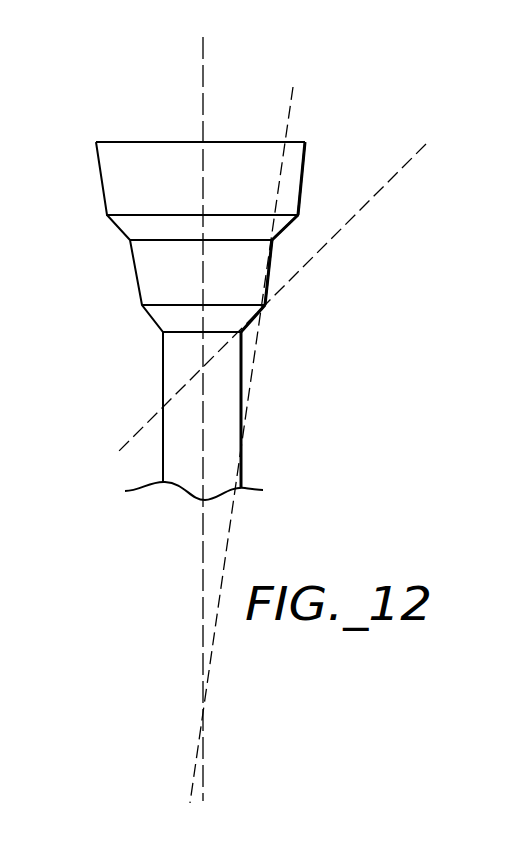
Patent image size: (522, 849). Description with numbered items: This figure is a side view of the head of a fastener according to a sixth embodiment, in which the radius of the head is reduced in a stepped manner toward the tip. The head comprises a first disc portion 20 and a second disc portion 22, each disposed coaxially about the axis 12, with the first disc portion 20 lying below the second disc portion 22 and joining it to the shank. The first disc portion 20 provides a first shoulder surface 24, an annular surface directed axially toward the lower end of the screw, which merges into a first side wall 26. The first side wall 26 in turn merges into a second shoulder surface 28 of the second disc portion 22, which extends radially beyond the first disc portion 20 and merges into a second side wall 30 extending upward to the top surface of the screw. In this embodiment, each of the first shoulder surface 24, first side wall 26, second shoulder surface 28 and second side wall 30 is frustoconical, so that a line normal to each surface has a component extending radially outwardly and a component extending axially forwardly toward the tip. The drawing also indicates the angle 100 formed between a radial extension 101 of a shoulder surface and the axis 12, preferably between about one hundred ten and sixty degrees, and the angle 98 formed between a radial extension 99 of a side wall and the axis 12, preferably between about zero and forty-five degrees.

The axis 12 is at (202, 119).
The first disc portion 20 is at (120, 278).
The second disc portion 22 is at (84, 187).
The first shoulder surface 24 is at (250, 328).
The first side wall 26 is at (268, 278).
The second shoulder surface 28 is at (288, 228).
The second side wall 30 is at (303, 176).
The angle 98 is at (158, 97).
The radial extension of a side wall 99 is at (300, 104).
The angle 100 is at (422, 139).
The radial extension of a shoulder surface 101 is at (361, 207).